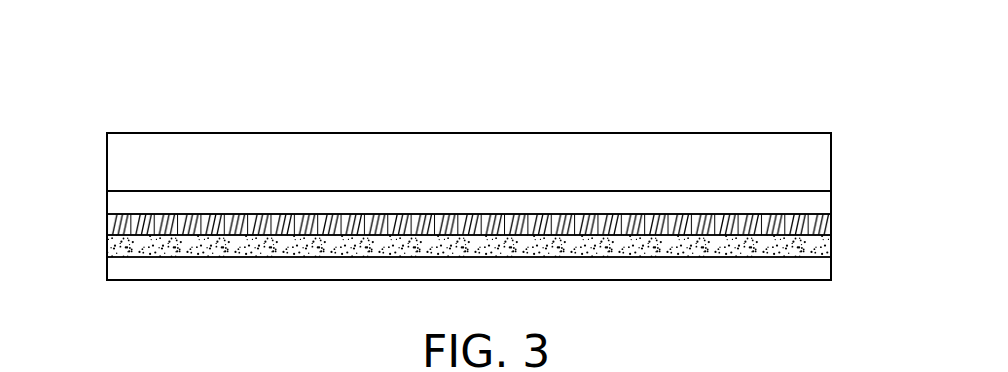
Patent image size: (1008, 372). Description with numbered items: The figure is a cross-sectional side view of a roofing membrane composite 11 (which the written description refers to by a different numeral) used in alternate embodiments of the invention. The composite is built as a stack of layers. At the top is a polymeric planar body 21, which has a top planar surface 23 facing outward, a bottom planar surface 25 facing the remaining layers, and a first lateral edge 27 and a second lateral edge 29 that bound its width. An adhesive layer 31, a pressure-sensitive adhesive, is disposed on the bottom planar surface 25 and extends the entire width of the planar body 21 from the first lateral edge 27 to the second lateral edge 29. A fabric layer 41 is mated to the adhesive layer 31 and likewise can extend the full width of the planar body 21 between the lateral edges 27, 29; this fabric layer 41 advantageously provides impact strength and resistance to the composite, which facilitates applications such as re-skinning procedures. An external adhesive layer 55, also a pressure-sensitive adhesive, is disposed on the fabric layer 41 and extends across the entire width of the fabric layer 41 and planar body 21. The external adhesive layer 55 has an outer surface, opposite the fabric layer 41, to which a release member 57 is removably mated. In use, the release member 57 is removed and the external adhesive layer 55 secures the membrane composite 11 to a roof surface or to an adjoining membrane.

The laminated panel assembly 11 is at (238, 88).
The polymeric planar body 21 is at (119, 130).
The top planar surface 23 is at (421, 132).
The bottom planar surface 25 is at (570, 190).
The first lateral edge 27 is at (107, 166).
The second lateral edge 29 is at (831, 133).
The adhesive layer 31 is at (107, 200).
The fabric layer 41 is at (831, 222).
The external adhesive layer 55 is at (107, 247).
The release member 57 is at (831, 270).